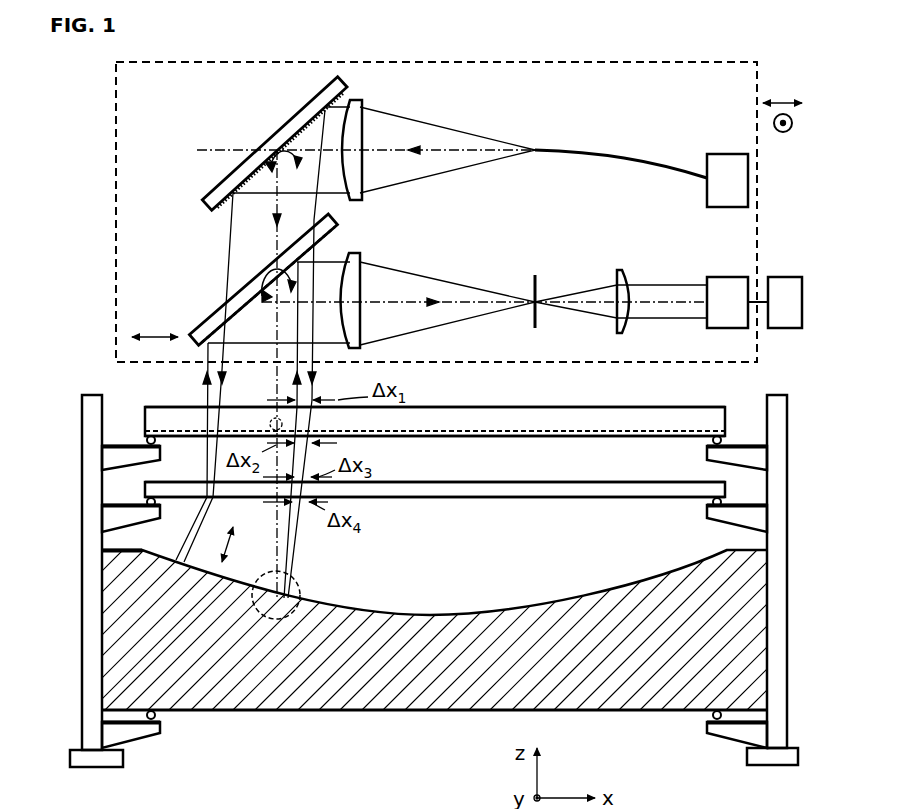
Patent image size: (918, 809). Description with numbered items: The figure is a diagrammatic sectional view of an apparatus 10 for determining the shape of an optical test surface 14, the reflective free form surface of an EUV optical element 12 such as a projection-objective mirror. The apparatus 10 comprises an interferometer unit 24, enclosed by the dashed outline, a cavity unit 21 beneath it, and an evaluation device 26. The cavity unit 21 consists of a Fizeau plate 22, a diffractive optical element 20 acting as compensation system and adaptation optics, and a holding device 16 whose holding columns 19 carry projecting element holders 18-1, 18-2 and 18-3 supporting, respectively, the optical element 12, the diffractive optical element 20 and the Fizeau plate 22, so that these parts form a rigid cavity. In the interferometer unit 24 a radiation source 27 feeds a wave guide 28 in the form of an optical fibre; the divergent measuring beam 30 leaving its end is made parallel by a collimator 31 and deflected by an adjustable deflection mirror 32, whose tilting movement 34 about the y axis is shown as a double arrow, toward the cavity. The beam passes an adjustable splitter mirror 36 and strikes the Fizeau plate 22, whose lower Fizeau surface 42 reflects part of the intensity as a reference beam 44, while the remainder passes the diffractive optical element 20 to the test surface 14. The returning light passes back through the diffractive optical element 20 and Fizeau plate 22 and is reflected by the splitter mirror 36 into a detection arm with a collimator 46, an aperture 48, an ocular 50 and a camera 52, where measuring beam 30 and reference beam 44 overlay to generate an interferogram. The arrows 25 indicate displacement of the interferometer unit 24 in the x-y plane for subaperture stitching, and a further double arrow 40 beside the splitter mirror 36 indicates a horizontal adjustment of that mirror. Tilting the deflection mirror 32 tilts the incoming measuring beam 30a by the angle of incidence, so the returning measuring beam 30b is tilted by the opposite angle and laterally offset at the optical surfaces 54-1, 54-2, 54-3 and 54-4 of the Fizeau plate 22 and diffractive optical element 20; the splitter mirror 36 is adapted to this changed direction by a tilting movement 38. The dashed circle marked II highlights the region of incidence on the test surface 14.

The apparatus 10 is at (98, 228).
The optical element 12 is at (395, 712).
The optical test surface 14 is at (497, 605).
The holding device 16 is at (427, 543).
The element holder 18-1 is at (132, 740).
The element holder 18-2 is at (118, 530).
The element holder 18-3 is at (120, 446).
The holding column 19 is at (82, 612).
The diffractive optical element 20 is at (435, 492).
The cavity unit 21 is at (80, 512).
The Fizeau plate 22 is at (435, 423).
The interferometer unit 24 is at (115, 268).
The arrows 25 is at (783, 100).
The evaluation device 26 is at (785, 277).
The radiation source 27 is at (722, 154).
The wave guide 28 is at (583, 152).
The measuring beam 30 is at (466, 130).
The incoming measuring beam 30a is at (313, 378).
The returning measuring beam 30b is at (295, 377).
The collimator 31 is at (358, 103).
The adjustable deflection mirror 32 is at (310, 112).
The tilting movement 34 is at (262, 153).
The adjustable splitter mirror 36 is at (338, 222).
The tilting movement 38 is at (262, 275).
The displacement direction of beam splitter 40 is at (157, 335).
The Fizeau surface 42 is at (493, 433).
The reference beam 44 is at (270, 424).
The collimator 46 is at (360, 258).
The aperture 48 is at (537, 275).
The ocular 50 is at (622, 268).
The camera 52 is at (725, 277).
The optical surface 54-1 is at (476, 406).
The optical surface 54-2 is at (413, 438).
The optical surface 54-3 is at (576, 481).
The optical surface 54-4 is at (433, 499).
The detail region II is at (300, 590).